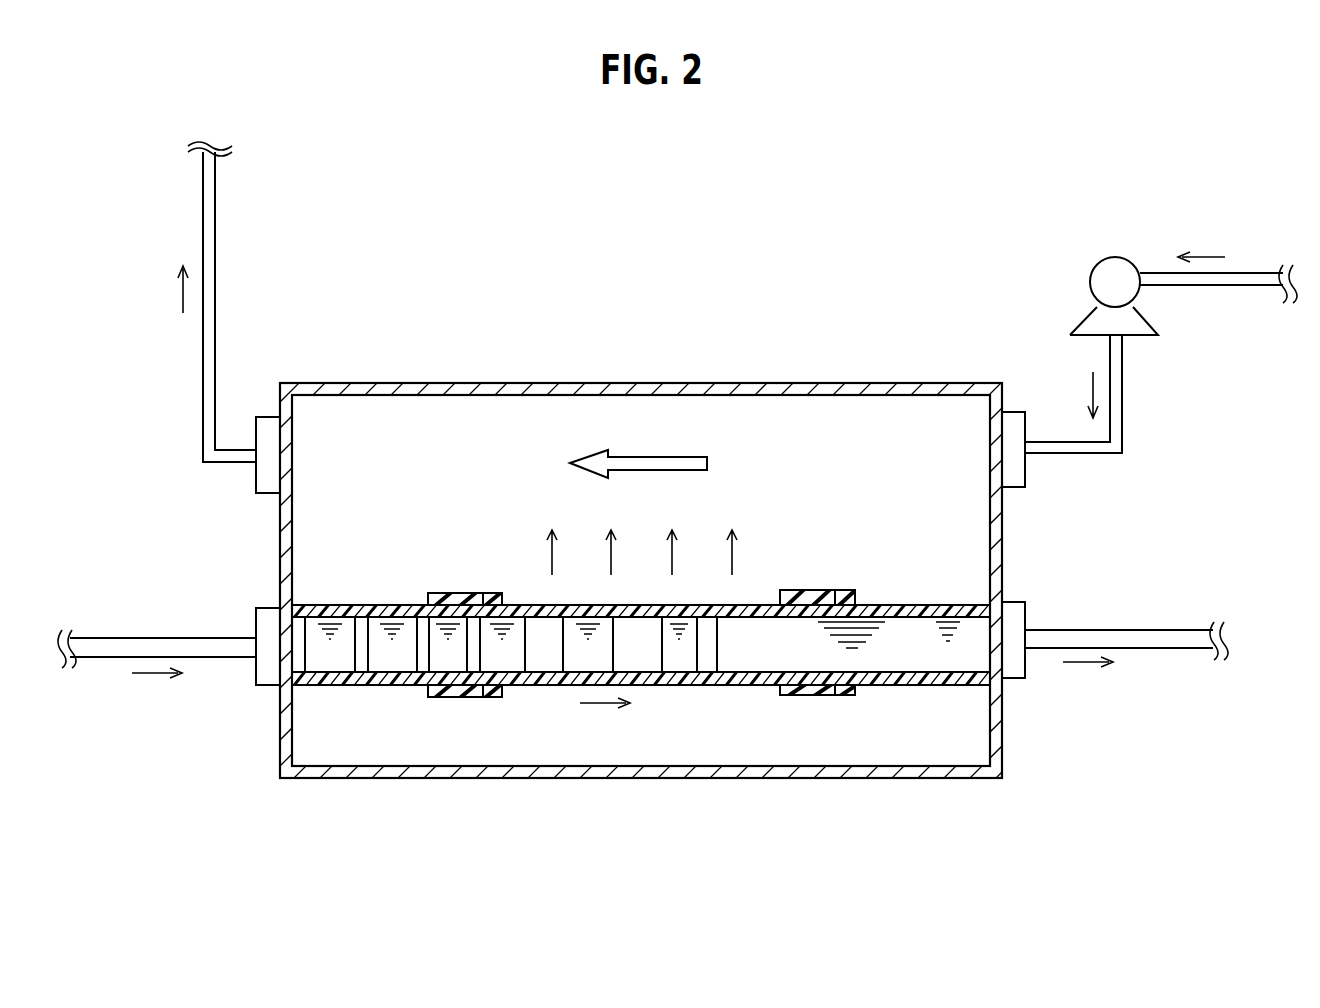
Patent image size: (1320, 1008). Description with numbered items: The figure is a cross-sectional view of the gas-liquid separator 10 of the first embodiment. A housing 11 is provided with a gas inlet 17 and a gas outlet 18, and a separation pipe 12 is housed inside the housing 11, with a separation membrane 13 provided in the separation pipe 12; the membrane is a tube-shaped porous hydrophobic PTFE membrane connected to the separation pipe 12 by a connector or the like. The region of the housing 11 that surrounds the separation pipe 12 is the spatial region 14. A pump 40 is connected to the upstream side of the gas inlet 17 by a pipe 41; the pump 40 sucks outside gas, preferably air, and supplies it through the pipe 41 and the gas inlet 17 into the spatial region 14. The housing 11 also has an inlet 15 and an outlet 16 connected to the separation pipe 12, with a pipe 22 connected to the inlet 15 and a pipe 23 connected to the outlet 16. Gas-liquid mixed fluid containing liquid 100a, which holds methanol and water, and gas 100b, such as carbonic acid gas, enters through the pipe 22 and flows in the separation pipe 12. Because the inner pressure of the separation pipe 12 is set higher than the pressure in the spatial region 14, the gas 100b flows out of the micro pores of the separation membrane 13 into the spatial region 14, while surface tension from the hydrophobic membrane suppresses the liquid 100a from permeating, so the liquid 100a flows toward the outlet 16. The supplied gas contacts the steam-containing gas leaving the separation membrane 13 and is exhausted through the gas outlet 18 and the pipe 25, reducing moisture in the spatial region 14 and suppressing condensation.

The gas-liquid separator 10 is at (656, 364).
The housing 11 is at (373, 383).
The separation pipe 12 is at (364, 605).
The separation membrane 13 is at (514, 602).
The spatial region 14 is at (353, 441).
The inlet 15 is at (266, 608).
The outlet 16 is at (1013, 602).
The gas inlet 17 is at (1014, 412).
The gas outlet 18 is at (268, 417).
The pipe 22 is at (147, 638).
The pipe 23 is at (1153, 630).
The pipe 25 is at (216, 247).
The pump 40 is at (1117, 257).
The pipe 41 is at (1123, 392).
The liquid 100a is at (332, 662).
The gas 100b is at (423, 667).